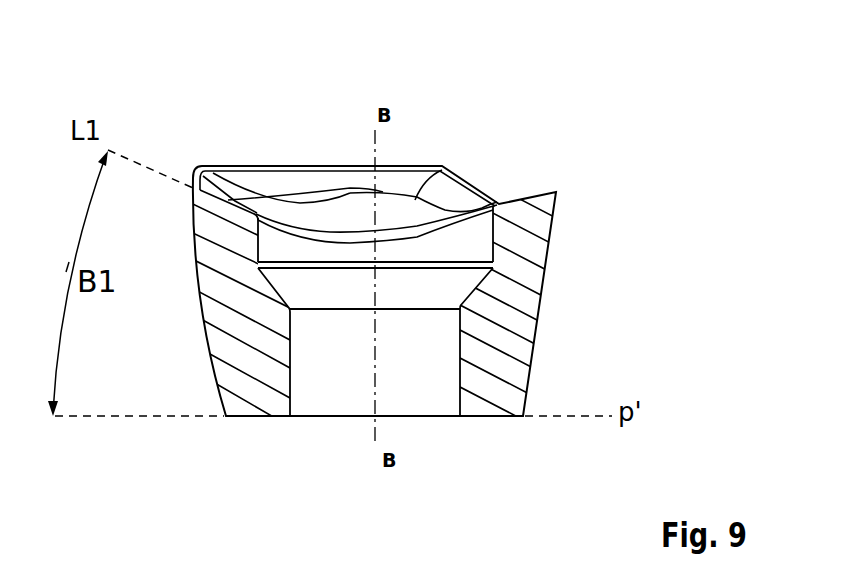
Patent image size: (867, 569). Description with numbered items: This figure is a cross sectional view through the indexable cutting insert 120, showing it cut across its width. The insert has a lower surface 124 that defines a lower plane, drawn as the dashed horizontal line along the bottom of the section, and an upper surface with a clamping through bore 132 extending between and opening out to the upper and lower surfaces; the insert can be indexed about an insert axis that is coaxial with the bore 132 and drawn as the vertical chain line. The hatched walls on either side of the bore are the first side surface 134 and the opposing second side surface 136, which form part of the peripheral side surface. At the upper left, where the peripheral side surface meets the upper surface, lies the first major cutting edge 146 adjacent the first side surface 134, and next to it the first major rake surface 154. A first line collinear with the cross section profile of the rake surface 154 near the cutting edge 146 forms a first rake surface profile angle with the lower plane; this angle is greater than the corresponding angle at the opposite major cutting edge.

The indexable cutting insert 120 is at (527, 153).
The lower surface 124 is at (267, 419).
The clamping through bore 132 is at (452, 252).
The first side surface 134 is at (211, 352).
The second side surface 136 is at (540, 343).
The first major cutting edge 146 is at (194, 185).
The first major rake surface 154 is at (228, 200).